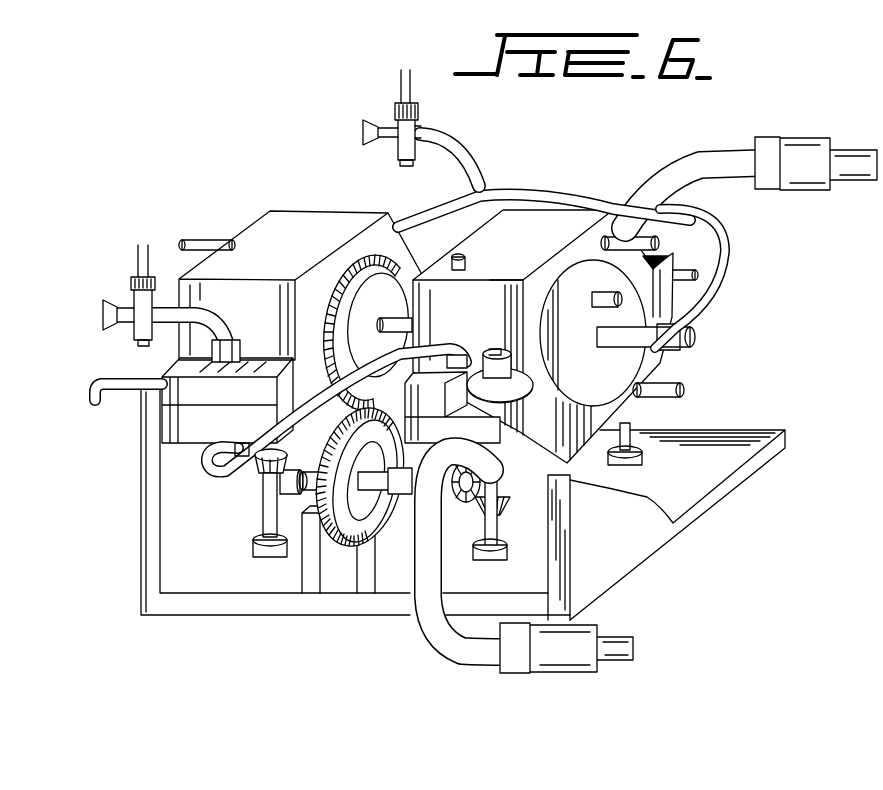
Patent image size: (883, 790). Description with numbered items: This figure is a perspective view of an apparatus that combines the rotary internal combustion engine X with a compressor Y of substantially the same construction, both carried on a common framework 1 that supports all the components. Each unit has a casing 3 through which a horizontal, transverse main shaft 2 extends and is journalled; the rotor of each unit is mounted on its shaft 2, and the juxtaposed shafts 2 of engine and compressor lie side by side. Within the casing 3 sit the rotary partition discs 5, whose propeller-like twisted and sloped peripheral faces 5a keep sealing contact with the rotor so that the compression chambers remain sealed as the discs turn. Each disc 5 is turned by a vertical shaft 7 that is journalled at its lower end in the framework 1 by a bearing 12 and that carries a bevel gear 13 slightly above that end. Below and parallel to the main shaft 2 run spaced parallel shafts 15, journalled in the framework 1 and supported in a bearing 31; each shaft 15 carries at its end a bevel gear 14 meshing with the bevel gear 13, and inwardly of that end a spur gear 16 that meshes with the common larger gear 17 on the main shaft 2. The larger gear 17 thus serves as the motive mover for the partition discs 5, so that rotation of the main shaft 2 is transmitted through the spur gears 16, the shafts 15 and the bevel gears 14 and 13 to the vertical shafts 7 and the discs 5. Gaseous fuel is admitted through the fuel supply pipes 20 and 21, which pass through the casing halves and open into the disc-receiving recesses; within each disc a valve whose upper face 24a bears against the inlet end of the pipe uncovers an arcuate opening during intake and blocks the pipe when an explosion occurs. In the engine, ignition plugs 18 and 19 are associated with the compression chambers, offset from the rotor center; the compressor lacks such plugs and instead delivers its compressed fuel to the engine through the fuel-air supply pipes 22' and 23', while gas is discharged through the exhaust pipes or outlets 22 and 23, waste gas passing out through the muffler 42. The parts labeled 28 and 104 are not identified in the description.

The framework 1 is at (173, 562).
The main shaft 2 is at (693, 345).
The casing 3 is at (305, 213).
The rotary partition disc 5 is at (563, 270).
The twisted and sloped face 5a is at (505, 392).
The vertical shaft 7 is at (498, 357).
The bearing 12 is at (545, 575).
The bevel gear 13 is at (263, 470).
The bevel gear 14 is at (267, 490).
The shaft 15 is at (370, 497).
The spur gear 16 is at (302, 567).
The larger gear 17 is at (375, 270).
The ignition plug 18 is at (457, 257).
The ignition plug 19 is at (643, 427).
The fuel supply pipe 20 is at (452, 147).
The fuel supply pipe 21 is at (177, 323).
The exhaust pipe 22 is at (751, 162).
The fuel-air supply pipe 22' is at (561, 234).
The exhaust pipe 23 is at (543, 663).
The fuel-air supply pipe 23' is at (281, 449).
The upper face of valve 24a is at (512, 287).
The pin 28 is at (660, 243).
The bearing 31 is at (413, 480).
The muffler 42 is at (210, 243).
The line 104 is at (882, 447).